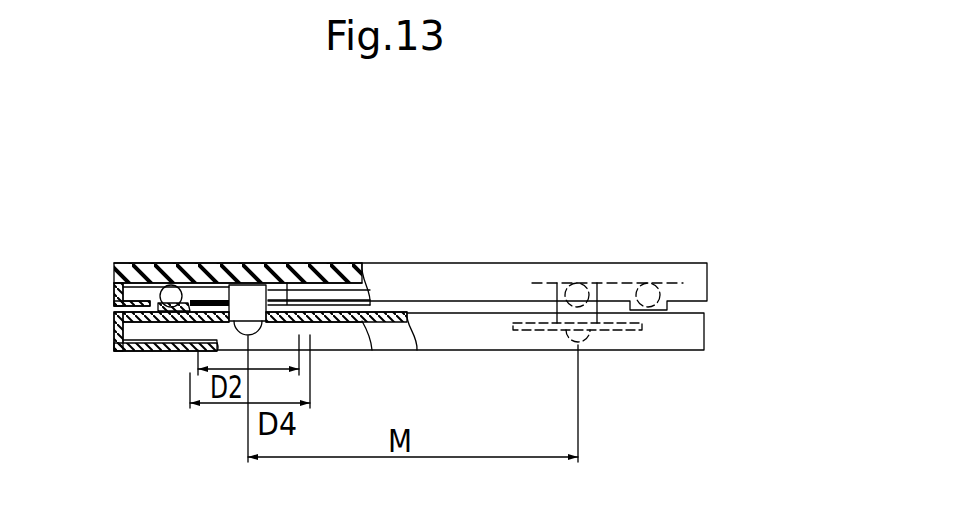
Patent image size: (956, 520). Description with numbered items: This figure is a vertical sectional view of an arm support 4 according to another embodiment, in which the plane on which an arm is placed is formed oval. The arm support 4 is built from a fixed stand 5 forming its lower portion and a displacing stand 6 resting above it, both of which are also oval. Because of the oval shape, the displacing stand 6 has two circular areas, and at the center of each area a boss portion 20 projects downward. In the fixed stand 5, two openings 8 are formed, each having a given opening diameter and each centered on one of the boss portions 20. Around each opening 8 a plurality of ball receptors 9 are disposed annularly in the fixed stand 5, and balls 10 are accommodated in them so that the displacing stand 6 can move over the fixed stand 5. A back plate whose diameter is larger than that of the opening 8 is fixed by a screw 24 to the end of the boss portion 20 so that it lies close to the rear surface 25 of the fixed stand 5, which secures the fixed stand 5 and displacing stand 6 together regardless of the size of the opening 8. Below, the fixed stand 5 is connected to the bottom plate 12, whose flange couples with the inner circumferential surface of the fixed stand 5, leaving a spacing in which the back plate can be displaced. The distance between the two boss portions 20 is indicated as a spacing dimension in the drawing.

The arm support 4 is at (227, 240).
The fixed stand 5 is at (447, 338).
The displacing stand 6 is at (403, 275).
The opening 8 is at (287, 300).
The ball receptor 9 is at (143, 290).
The ball 10 is at (178, 291).
The bottom plate 12 is at (144, 352).
The boss portion 20 is at (255, 298).
The screw 24 is at (579, 341).
The rear surface 25 is at (372, 350).